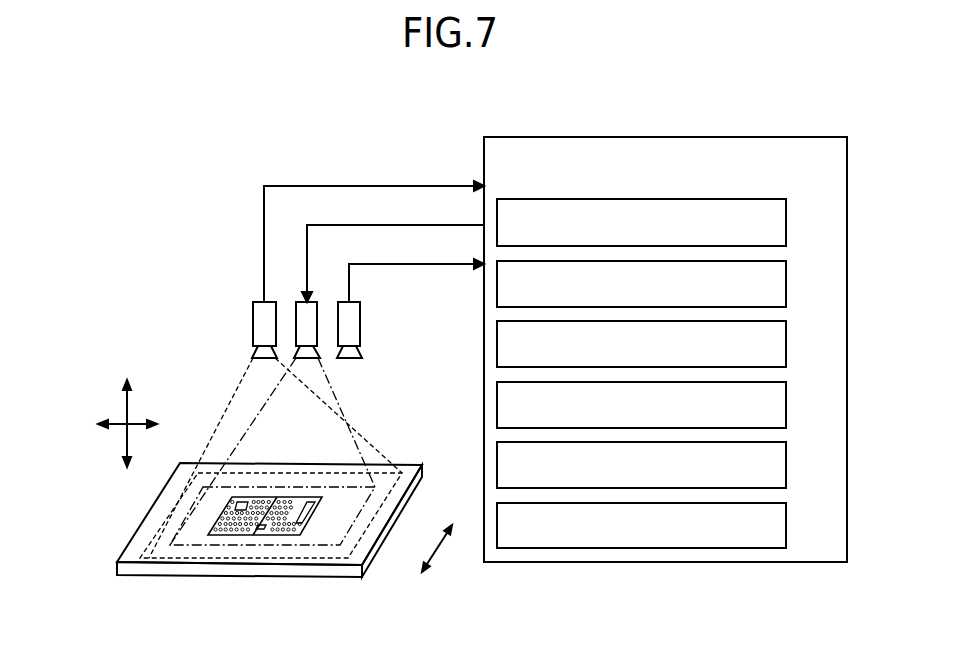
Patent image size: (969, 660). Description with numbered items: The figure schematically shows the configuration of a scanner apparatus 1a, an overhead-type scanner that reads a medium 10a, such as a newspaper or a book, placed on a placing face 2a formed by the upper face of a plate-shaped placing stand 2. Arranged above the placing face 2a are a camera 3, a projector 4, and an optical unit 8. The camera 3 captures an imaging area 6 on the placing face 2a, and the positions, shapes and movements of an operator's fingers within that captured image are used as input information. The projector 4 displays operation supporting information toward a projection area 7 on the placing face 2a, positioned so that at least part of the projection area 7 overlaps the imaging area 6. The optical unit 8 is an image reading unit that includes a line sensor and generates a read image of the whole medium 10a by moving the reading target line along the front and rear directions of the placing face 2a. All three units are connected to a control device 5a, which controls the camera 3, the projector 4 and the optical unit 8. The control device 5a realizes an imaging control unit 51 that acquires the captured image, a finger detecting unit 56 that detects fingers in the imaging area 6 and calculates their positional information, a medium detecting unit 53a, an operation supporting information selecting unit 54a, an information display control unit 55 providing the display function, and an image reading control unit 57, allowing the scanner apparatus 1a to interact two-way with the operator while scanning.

The scanner apparatus 1a is at (268, 406).
The placing stand 2 is at (271, 498).
The placing face 2a is at (409, 467).
The camera 3 is at (253, 322).
The projector 4 is at (299, 301).
The optical unit 8 is at (361, 322).
The control device 5a is at (723, 137).
The imaging control unit 51 is at (786, 225).
The finger detecting unit 56 is at (786, 286).
The medium detecting unit 53a is at (786, 346).
The operation supporting information selecting unit 54a is at (786, 407).
The information display control unit 55 is at (786, 467).
The image reading control unit 57 is at (786, 527).
The imaging area 6 is at (147, 566).
The projection area 7 is at (317, 547).
The medium 10a is at (228, 535).